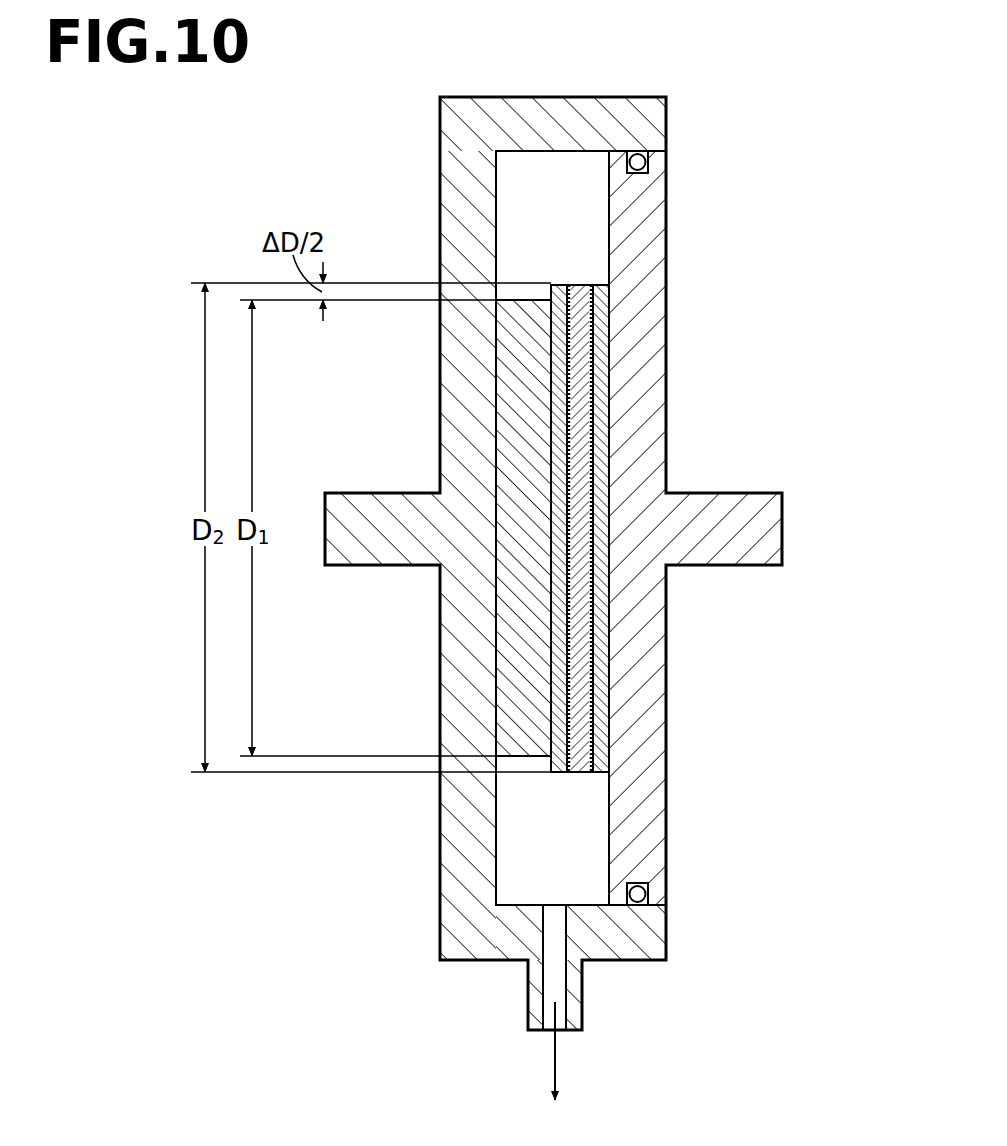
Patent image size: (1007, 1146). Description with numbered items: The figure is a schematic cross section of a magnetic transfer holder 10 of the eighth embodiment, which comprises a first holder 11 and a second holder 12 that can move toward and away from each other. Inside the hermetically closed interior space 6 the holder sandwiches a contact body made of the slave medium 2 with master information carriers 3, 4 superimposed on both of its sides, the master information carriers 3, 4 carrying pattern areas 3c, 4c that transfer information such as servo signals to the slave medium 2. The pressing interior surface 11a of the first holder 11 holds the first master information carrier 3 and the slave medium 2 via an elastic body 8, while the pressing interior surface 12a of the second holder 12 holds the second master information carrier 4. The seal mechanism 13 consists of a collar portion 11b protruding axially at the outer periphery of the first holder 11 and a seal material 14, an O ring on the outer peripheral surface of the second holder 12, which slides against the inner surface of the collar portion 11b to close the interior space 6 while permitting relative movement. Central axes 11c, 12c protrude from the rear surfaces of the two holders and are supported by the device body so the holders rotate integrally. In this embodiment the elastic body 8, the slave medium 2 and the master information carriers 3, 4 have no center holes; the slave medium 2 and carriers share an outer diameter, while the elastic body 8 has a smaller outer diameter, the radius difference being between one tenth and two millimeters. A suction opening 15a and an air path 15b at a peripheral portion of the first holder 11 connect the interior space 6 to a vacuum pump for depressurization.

The magnetic transfer holder 10 is at (428, 40).
The first holder 11 is at (438, 243).
The pressing interior surface 11a is at (497, 853).
The collar portion 11b is at (565, 100).
The central axis 11c is at (362, 565).
The second holder 12 is at (668, 273).
The pressing interior surface 12a is at (608, 822).
The central axis 12c is at (750, 493).
The seal mechanism 13 is at (640, 142).
The seal material 14 is at (646, 160).
The interior space 6 is at (507, 180).
The elastic body 8 is at (510, 350).
The master information carrier 4 is at (605, 380).
The pattern area 4c is at (598, 284).
The master information carrier 3 is at (557, 284).
The pattern area 3c is at (563, 284).
The slave medium 2 is at (578, 284).
The suction opening 15a is at (555, 906).
The air path 15b is at (545, 980).